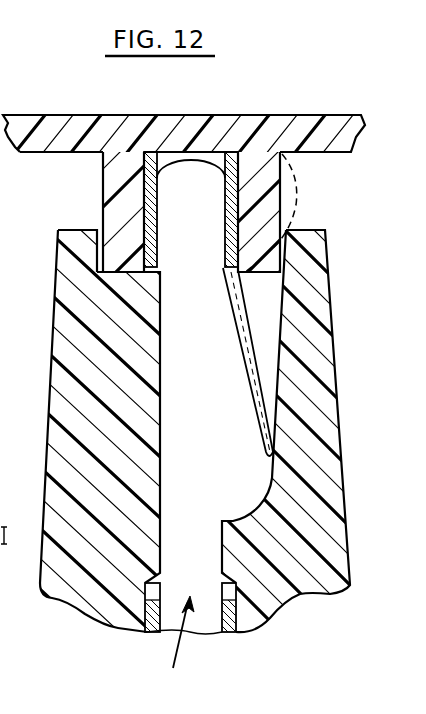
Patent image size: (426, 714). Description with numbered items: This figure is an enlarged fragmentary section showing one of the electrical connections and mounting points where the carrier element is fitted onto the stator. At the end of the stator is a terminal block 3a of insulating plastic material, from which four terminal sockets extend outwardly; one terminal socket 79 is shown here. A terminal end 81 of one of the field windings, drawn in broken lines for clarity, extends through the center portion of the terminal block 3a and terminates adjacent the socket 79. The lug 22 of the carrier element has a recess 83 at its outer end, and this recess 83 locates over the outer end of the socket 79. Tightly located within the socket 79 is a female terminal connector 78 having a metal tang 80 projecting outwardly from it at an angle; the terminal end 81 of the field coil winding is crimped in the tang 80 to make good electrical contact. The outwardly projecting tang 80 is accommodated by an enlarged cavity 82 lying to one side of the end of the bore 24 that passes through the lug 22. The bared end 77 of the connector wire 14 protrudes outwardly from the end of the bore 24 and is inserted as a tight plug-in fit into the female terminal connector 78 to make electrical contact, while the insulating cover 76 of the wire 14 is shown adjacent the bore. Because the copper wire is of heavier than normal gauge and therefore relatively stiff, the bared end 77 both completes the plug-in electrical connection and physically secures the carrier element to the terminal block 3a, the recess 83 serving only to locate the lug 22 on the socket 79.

The terminal block 3a is at (360, 129).
The terminal socket 79 is at (115, 184).
The terminal end of field winding 81 is at (300, 190).
The female terminal connector 78 is at (232, 207).
The tang 80 is at (252, 340).
The lug 22 is at (52, 318).
The recess 83 is at (98, 232).
The bared end of connector wire 77 is at (181, 371).
The enlarged cavity 82 is at (226, 418).
The bore 24 is at (140, 617).
The insulating cover 76 is at (226, 630).
The connector wire 14 is at (179, 646).